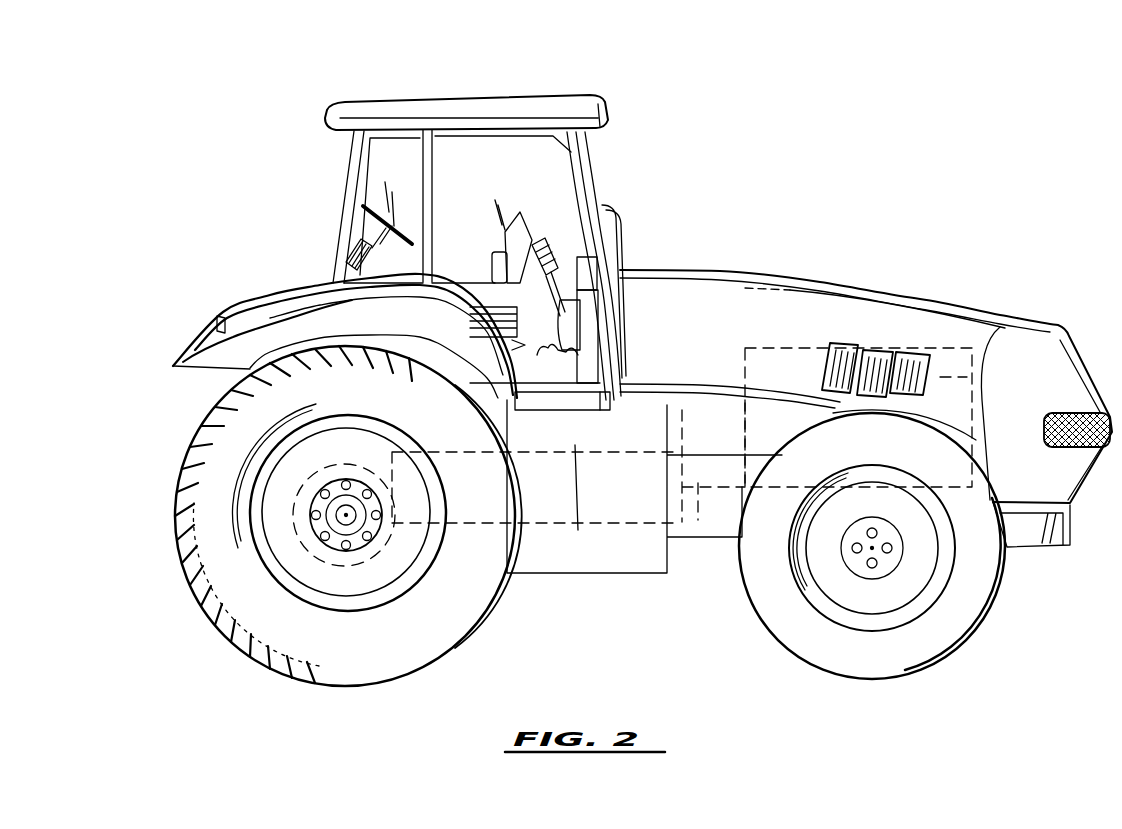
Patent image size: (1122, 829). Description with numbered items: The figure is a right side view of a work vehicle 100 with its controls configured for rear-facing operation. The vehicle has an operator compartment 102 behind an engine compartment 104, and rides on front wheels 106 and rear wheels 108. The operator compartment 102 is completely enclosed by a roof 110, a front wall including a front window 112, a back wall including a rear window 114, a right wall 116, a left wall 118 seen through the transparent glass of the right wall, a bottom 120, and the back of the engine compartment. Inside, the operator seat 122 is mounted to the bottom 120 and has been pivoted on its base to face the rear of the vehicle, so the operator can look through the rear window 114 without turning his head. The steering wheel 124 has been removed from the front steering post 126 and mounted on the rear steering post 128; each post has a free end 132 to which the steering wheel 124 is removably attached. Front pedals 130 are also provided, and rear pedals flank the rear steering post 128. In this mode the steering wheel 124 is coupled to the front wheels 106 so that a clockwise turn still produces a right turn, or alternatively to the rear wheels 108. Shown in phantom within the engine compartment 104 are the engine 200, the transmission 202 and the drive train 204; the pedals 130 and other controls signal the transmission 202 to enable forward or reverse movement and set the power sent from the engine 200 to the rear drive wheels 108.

The work vehicle 100 is at (925, 74).
The operator compartment 102 is at (652, 107).
The engine compartment 104 is at (960, 307).
The front wheels 106 is at (1002, 585).
The rear wheels 108 is at (478, 622).
The roof 110 is at (548, 104).
The front window 112 is at (600, 178).
The rear window 114 is at (343, 175).
The right wall 116 is at (568, 155).
The left wall 118 is at (487, 152).
The bottom 120 is at (562, 407).
The operator seat 122 is at (522, 212).
The steering wheel 124 is at (368, 208).
The front steering post 126 is at (560, 275).
The rear steering post 128 is at (352, 267).
The front pedals 130 is at (552, 362).
The free end 132 is at (543, 246).
The engine 200 is at (976, 345).
The transmission 202 is at (730, 490).
The drive train 204 is at (555, 523).